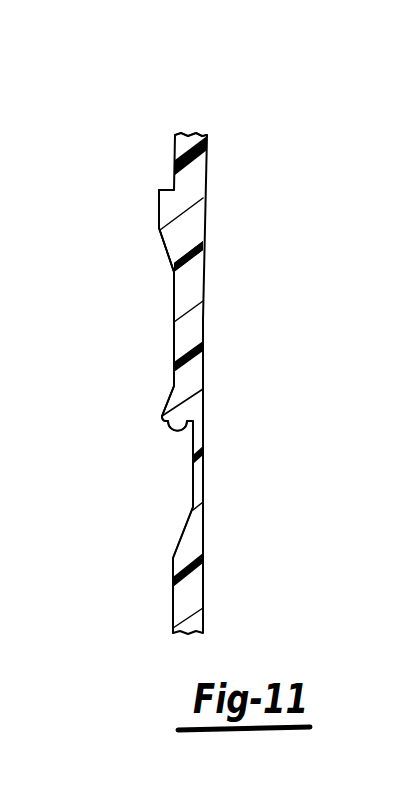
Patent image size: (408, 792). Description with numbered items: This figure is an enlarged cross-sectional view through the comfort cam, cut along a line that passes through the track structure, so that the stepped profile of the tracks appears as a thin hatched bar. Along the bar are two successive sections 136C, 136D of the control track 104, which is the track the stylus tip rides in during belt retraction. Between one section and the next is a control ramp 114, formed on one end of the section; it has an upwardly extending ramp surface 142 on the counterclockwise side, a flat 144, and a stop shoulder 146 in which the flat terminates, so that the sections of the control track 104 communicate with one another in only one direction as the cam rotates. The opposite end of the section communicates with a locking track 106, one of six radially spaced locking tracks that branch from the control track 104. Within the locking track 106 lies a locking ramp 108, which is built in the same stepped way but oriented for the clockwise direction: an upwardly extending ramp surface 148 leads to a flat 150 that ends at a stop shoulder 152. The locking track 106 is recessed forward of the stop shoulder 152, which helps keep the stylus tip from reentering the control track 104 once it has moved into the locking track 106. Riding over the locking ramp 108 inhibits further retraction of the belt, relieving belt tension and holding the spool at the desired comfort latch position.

The control track 104 is at (163, 326).
The locking track 106 is at (152, 516).
The locking ramp 108 is at (142, 395).
The control ramp 114 is at (147, 229).
The section of control track 136C is at (163, 281).
The section of control track 136D is at (160, 132).
The ramp surface 142 is at (163, 240).
The flat 144 is at (159, 213).
The stop shoulder 146 is at (172, 189).
The ramp surface 148 is at (157, 405).
The flat 150 is at (162, 420).
The stop shoulder 152 is at (178, 424).